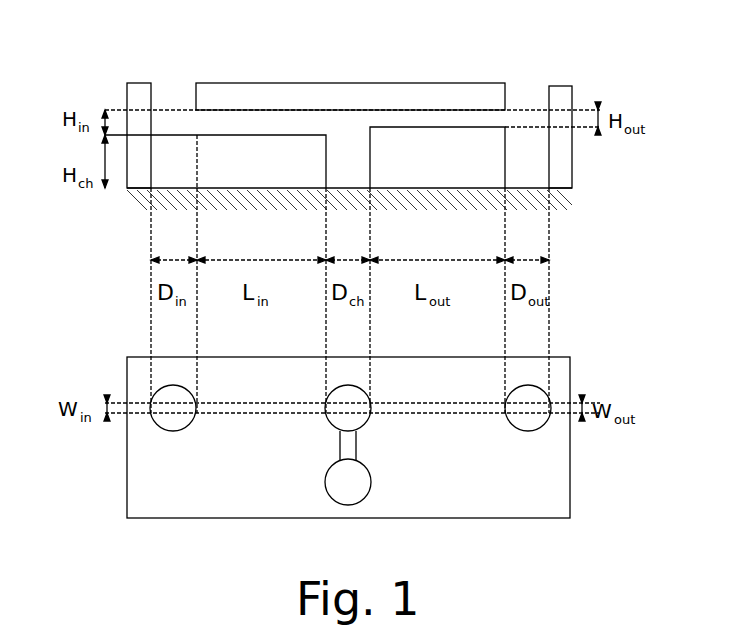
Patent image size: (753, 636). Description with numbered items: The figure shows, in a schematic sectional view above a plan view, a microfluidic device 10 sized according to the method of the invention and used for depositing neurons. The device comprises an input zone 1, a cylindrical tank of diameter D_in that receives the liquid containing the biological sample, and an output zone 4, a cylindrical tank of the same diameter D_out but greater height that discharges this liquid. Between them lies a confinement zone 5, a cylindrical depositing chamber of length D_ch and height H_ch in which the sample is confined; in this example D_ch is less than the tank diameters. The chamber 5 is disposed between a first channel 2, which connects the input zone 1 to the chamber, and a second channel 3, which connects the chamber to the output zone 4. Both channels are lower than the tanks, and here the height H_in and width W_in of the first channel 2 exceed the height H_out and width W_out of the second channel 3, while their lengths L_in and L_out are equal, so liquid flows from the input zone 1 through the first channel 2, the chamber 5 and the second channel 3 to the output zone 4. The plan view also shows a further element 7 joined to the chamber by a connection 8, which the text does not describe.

The input zone 1 is at (163, 108).
The first channel 2 is at (245, 105).
The second channel 3 is at (430, 120).
The output zone 4 is at (522, 104).
The confinement zone 5 is at (343, 145).
The auxiliary port 7 is at (326, 471).
The connecting channel 8 is at (357, 440).
The microfluidic device 10 is at (94, 300).